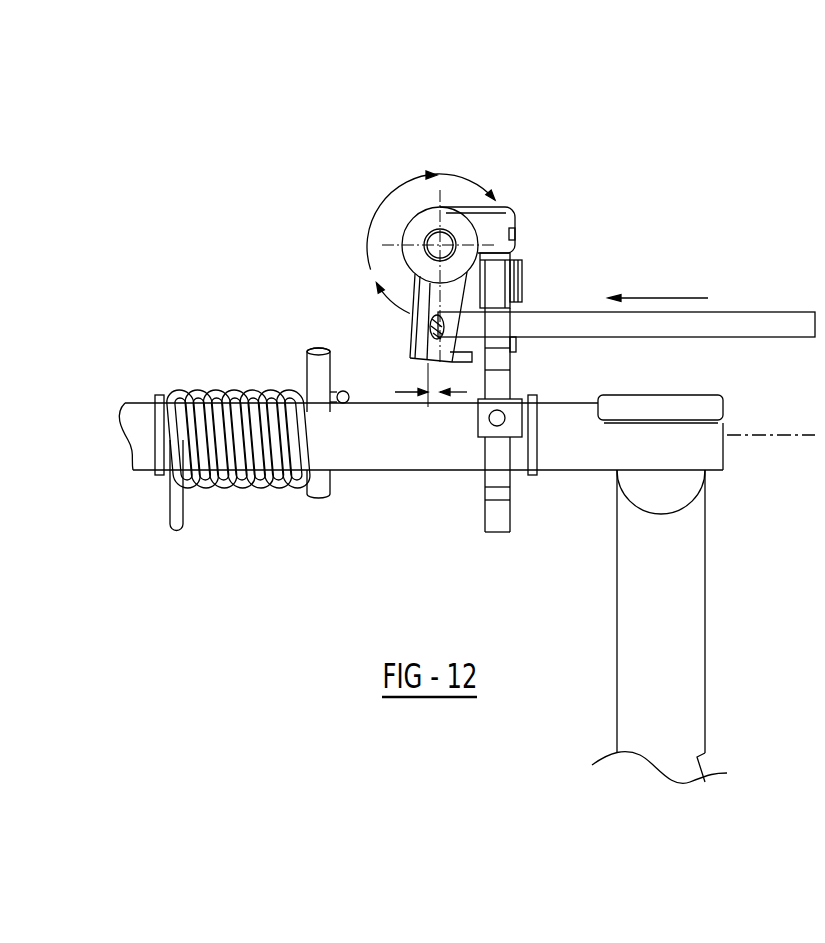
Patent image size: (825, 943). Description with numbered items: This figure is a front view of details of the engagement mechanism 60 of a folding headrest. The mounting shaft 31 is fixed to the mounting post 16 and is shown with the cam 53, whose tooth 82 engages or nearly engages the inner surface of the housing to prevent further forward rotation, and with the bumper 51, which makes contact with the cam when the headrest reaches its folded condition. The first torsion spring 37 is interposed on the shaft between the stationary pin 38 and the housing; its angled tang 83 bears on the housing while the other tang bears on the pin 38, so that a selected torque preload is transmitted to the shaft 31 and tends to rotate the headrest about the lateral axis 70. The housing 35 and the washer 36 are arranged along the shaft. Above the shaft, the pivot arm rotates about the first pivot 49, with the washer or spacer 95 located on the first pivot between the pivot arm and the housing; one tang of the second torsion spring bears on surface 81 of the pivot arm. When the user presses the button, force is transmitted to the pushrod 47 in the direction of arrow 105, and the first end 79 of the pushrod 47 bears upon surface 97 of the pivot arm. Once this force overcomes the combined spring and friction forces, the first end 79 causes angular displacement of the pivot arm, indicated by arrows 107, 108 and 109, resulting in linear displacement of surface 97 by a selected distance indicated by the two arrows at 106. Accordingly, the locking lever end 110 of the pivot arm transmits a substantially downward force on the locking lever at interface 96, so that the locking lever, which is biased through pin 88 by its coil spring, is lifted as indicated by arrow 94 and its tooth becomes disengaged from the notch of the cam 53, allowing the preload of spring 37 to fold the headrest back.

The mounting post 16 is at (650, 647).
The shaft 31 is at (637, 459).
The housing 35 is at (158, 395).
The washer 36 is at (540, 425).
The first torsion spring 37 is at (250, 490).
The stationary pin 38 is at (320, 501).
The pushrod 47 is at (758, 313).
The first pivot 49 is at (428, 236).
The bumper 51 is at (480, 430).
The cam 53 is at (512, 487).
The engagement mechanism 60 is at (492, 157).
The lateral axis 70 is at (777, 432).
The first end 79 is at (445, 322).
The surface 81 is at (406, 346).
The tooth 82 is at (500, 533).
The angled tang 83 is at (178, 532).
The pin 88 is at (525, 282).
The arrow 94 is at (517, 345).
The washer or spacer 95 is at (402, 244).
The interface surface 96 is at (520, 258).
The surface 97 is at (410, 350).
The arrow 105 is at (663, 297).
The arrows 106 is at (400, 394).
The arrow 107 is at (383, 305).
The arrow 108 is at (407, 177).
The arrow 109 is at (475, 177).
The locking lever end 110 is at (513, 207).